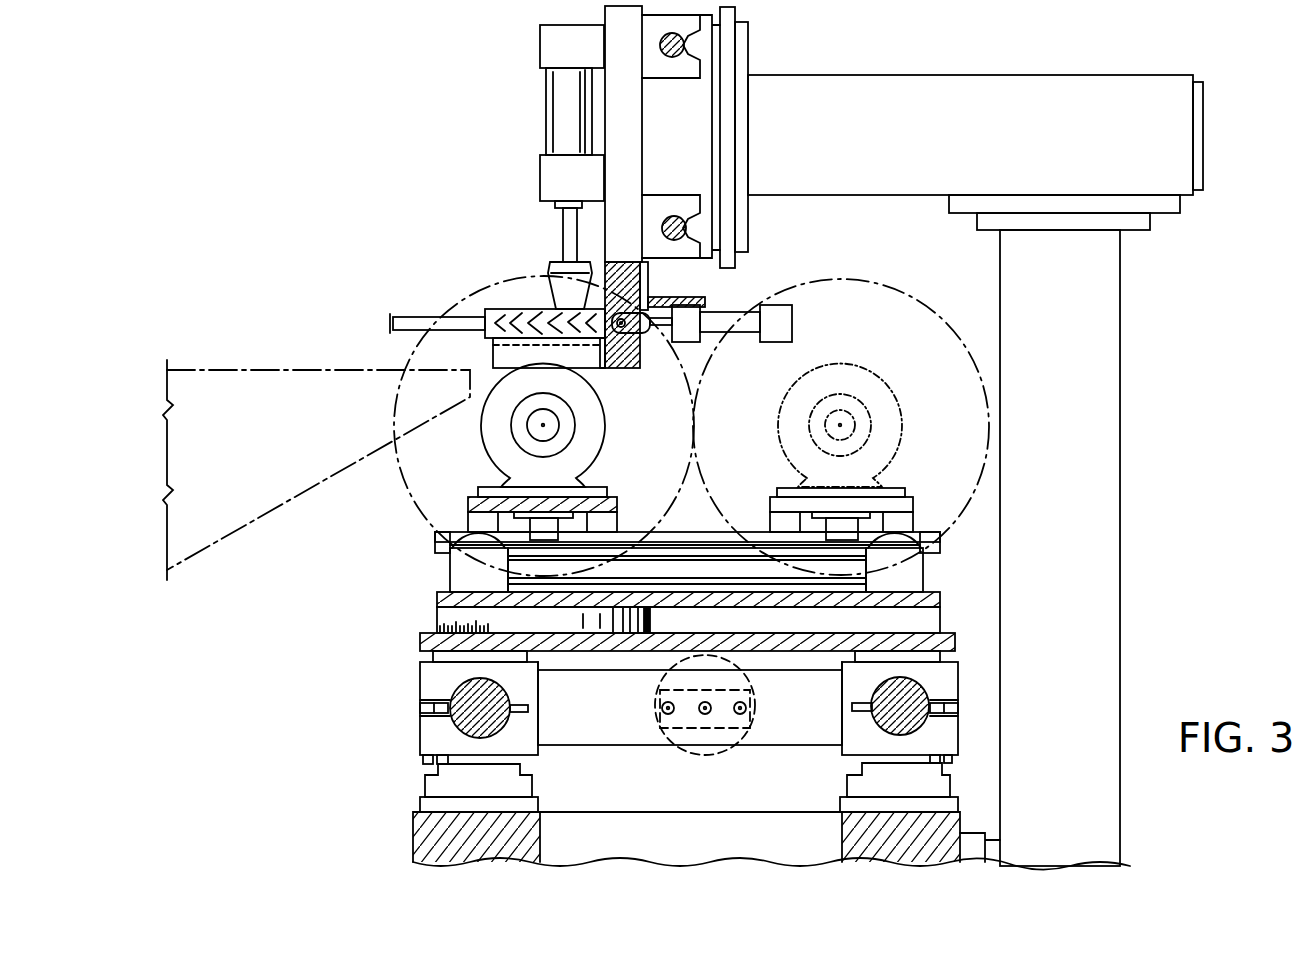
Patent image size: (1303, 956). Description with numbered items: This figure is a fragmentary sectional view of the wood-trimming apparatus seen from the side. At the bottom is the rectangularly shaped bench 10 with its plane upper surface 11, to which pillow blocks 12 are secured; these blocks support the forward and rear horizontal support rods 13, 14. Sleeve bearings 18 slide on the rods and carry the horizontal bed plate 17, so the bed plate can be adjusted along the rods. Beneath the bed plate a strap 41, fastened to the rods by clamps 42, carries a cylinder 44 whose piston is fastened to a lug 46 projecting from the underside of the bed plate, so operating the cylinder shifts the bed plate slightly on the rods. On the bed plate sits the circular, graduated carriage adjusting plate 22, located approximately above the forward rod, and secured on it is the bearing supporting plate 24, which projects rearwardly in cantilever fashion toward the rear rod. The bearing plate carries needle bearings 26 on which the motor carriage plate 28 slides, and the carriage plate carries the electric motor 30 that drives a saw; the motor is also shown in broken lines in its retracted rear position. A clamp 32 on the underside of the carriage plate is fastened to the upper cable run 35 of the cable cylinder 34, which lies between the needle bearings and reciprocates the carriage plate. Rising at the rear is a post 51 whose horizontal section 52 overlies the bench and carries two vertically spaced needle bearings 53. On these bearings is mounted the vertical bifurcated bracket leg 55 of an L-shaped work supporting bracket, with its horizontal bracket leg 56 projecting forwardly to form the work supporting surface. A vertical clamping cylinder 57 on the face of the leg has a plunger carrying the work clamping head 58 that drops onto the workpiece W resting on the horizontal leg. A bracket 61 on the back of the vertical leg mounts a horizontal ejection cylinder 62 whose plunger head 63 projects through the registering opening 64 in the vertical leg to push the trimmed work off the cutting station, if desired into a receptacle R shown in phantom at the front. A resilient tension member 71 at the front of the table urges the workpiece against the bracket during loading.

The bench 10 is at (400, 815).
The upper surface 11 is at (690, 811).
The pillow block 12 is at (520, 782).
The support rod 13 is at (425, 706).
The support rod 14 is at (920, 692).
The bed plate 17 is at (420, 640).
The sleeve bearing 18 is at (432, 657).
The carriage adjusting plate 22 is at (436, 615).
The bearing supporting plate 24 is at (945, 600).
The needle bearing 26 is at (940, 541).
The motor carriage plate 28 is at (470, 502).
The electric motor 30 is at (596, 425).
The clamp 32 is at (548, 541).
The cable cylinder 34 is at (450, 568).
The upper cable run 35 is at (684, 531).
The strap 41 is at (588, 746).
The clamp 42 is at (422, 742).
The cylinder 44 is at (695, 748).
The lug 46 is at (656, 666).
The post 51 is at (1108, 435).
The horizontal section 52 is at (893, 80).
The needle bearing 53 is at (672, 58).
The bracket leg 55 is at (632, 130).
The bracket leg 56 is at (492, 355).
The clamping cylinder 57 is at (541, 122).
The work clamping head 58 is at (548, 268).
The bracket 61 is at (660, 298).
The ejection cylinder 62 is at (722, 316).
The operating head 63 is at (640, 336).
The registering opening 64 is at (600, 352).
The resilient tension member 71 is at (415, 316).
The workpiece W is at (500, 310).
The receptacle R is at (222, 370).